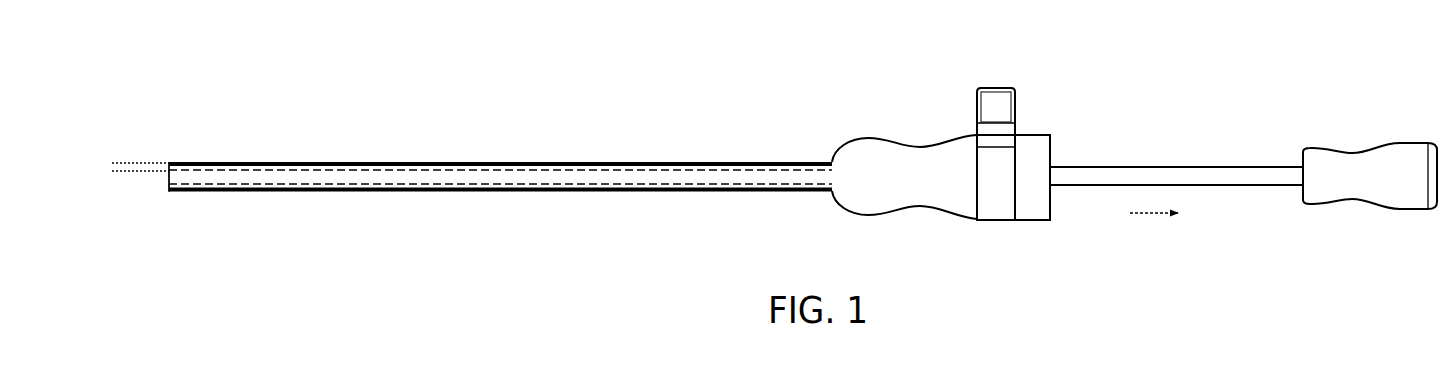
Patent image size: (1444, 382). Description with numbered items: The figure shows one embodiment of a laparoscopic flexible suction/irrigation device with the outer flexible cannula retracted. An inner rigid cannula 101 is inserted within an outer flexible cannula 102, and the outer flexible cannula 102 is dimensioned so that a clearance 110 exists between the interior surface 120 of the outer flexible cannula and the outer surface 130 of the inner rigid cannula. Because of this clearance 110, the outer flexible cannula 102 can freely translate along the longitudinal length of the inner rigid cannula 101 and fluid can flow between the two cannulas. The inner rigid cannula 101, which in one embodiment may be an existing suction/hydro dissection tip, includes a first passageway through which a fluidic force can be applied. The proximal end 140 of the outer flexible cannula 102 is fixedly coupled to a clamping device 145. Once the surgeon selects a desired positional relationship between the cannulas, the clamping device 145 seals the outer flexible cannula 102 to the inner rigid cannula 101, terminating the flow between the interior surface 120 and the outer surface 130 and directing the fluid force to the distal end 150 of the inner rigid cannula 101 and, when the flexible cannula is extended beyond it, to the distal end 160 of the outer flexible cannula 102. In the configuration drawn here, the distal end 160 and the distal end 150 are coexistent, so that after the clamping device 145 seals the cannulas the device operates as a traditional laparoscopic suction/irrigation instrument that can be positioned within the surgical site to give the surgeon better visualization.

The inner rigid cannula 101 is at (1205, 166).
The outer flexible cannula 102 is at (500, 182).
The clearance 110 is at (129, 194).
The interior surface 120 is at (249, 171).
The outer surface 130 is at (299, 161).
The proximal end 140 is at (835, 138).
The clamping device 145 is at (1026, 80).
The distal end 150 is at (167, 182).
The distal end 160 is at (168, 190).